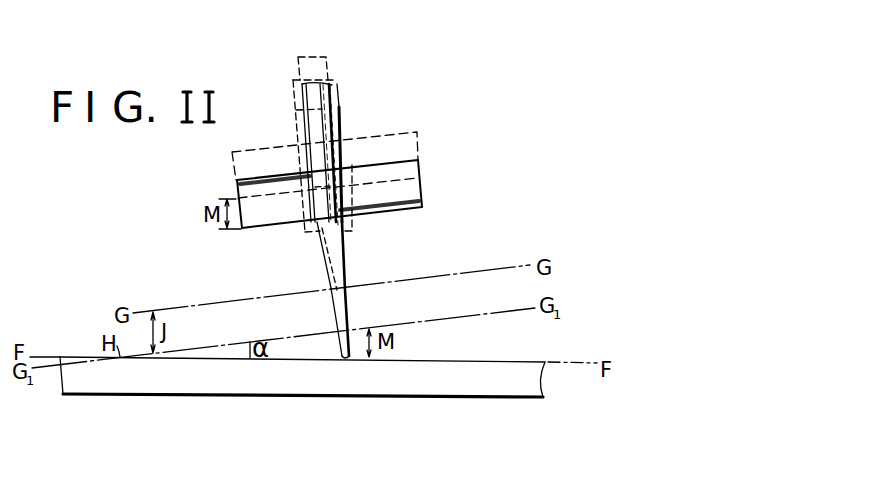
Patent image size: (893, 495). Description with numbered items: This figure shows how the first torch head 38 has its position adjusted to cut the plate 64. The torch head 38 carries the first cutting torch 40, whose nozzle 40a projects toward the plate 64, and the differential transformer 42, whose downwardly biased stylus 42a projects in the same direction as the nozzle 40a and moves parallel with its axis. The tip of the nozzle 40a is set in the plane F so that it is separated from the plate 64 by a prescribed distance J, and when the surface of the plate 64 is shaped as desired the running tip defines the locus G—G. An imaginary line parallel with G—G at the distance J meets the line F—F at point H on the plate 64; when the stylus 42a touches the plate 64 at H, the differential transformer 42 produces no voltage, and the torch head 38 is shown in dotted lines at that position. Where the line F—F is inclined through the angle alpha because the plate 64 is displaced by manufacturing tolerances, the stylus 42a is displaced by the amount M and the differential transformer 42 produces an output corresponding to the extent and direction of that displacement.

The first torch head 38 is at (421, 192).
The first cutting torch 40 is at (332, 87).
The nozzle 40a is at (345, 236).
The differential transformer 42 is at (340, 120).
The stylus 42a is at (340, 350).
The plate 64 is at (490, 384).